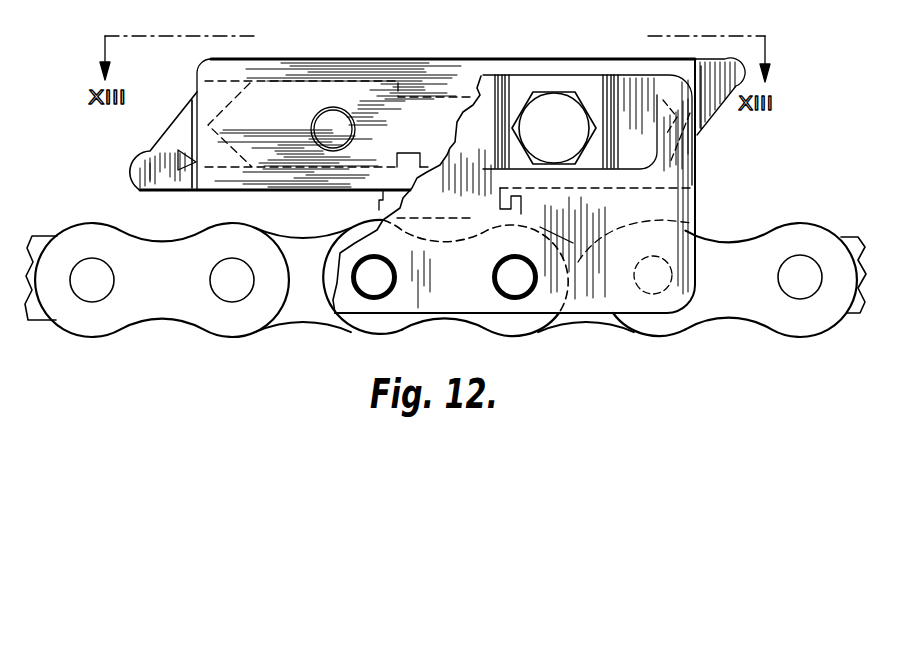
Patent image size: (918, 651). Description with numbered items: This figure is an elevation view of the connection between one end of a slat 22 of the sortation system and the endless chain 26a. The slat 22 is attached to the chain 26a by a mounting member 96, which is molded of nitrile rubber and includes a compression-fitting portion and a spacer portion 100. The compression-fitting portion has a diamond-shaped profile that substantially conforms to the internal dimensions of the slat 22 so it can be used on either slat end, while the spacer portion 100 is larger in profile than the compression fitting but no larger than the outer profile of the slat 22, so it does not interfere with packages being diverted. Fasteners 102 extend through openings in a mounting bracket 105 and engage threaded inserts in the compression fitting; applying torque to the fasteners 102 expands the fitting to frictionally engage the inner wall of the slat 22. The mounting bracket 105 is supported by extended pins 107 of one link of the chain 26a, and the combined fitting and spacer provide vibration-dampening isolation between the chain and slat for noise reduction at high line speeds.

The mounting member 96 is at (368, 55).
The spacer portion 100 is at (308, 72).
The slat 22 is at (177, 127).
The fastener 102 is at (333, 148).
The mounting bracket 105 is at (697, 200).
The extended pin 107 is at (382, 292).
The endless chain 26a is at (137, 327).